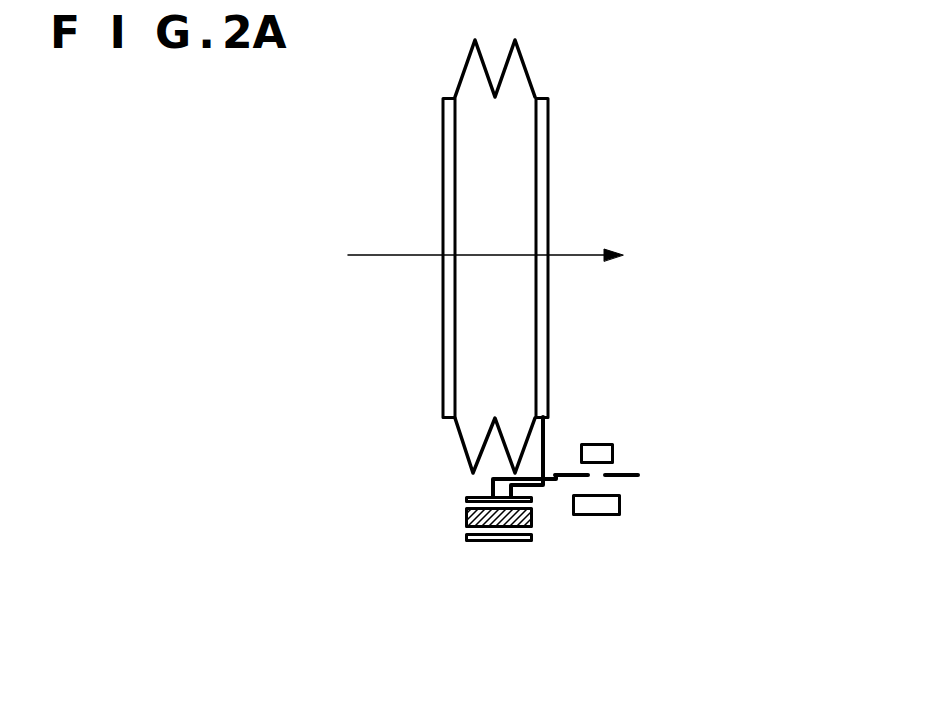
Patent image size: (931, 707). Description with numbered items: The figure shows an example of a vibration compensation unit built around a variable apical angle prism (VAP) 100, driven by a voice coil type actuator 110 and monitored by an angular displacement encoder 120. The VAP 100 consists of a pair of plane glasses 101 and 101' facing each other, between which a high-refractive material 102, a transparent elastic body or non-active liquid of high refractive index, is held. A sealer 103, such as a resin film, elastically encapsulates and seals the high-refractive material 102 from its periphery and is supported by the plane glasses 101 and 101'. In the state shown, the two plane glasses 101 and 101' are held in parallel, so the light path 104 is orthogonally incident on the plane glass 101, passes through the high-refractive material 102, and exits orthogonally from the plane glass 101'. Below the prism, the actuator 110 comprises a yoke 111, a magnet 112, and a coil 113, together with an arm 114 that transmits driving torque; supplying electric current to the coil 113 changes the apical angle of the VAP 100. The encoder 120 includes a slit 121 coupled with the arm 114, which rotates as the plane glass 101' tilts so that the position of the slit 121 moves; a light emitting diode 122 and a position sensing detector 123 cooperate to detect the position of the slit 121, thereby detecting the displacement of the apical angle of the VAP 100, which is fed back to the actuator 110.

The variable apical angle prism 100 is at (412, 82).
The plane glass 101 is at (406, 258).
The plane glass 101' is at (594, 258).
The high-refractive material 102 is at (520, 312).
The sealer 103 is at (530, 52).
The light path 104 is at (370, 255).
The voice coil type actuator 110 is at (352, 427).
The yoke 111 is at (465, 499).
The magnet 112 is at (466, 538).
The coil 113 is at (465, 520).
The arm 114 is at (492, 481).
The angular displacement encoder 120 is at (730, 407).
The slit 121 is at (641, 476).
The light emitting diode 122 is at (613, 454).
The position sensing detector 123 is at (620, 505).